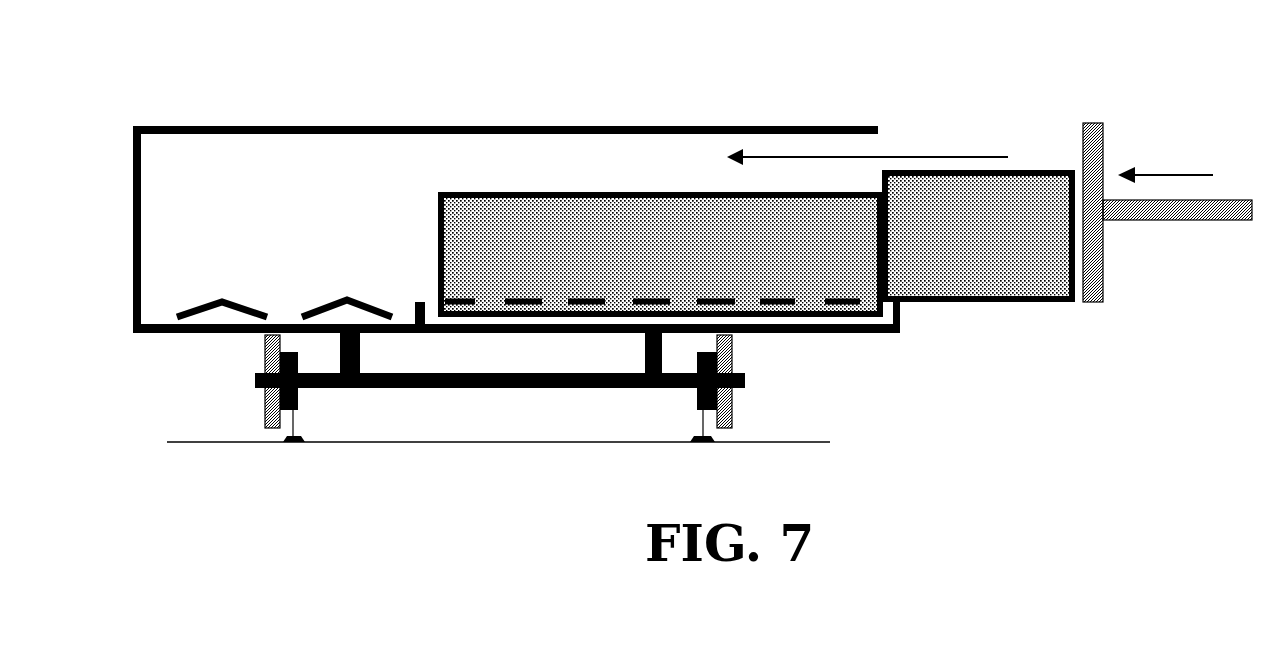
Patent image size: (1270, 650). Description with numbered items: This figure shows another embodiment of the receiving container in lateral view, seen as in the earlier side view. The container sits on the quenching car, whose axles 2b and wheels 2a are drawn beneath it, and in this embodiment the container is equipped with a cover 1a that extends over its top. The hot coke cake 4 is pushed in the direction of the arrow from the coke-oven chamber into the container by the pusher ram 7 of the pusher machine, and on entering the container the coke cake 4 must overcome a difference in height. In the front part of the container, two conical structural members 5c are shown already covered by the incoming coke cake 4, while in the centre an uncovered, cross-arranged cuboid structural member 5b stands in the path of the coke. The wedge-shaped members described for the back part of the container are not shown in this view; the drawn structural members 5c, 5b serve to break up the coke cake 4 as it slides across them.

The cover 1a is at (398, 125).
The coke cake 4 is at (534, 200).
The cuboid structural member 5b is at (417, 303).
The conical structural members 5c is at (222, 302).
The wheels 2a is at (257, 437).
The axles 2b is at (575, 386).
The pusher ram 7 is at (1163, 221).